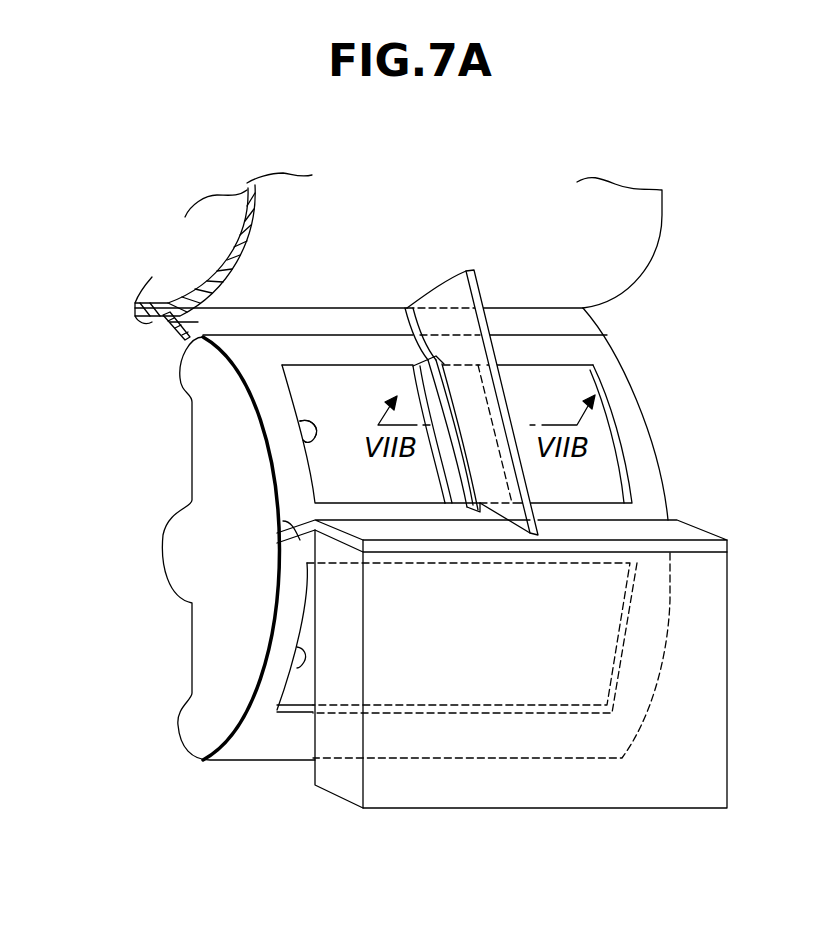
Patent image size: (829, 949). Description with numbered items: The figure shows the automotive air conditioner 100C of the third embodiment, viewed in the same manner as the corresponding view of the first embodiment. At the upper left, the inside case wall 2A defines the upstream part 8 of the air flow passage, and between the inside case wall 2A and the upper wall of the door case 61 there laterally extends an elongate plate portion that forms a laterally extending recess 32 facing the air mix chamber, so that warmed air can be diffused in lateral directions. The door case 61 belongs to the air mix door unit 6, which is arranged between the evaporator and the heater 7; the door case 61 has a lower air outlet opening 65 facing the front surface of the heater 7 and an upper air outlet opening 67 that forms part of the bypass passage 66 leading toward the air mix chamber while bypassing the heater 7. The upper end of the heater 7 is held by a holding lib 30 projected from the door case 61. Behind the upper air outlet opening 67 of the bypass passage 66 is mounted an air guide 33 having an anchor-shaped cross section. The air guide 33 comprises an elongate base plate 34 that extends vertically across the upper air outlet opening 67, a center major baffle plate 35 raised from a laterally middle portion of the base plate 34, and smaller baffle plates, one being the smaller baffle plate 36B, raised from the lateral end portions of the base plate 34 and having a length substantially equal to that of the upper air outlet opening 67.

The automotive air conditioner 100C is at (658, 143).
The inside case wall 2A is at (662, 216).
The air mix door unit 6 is at (298, 334).
The heater 7 is at (330, 780).
The upstream part 8 is at (210, 273).
The holding lib 30 is at (283, 521).
The recess 32 is at (173, 333).
The air guide 33 is at (448, 273).
The base plate 34 is at (455, 487).
The center major baffle plate 35 is at (470, 297).
The smaller baffle plate 36B is at (414, 362).
The door case 61 is at (248, 348).
The lower air outlet opening 65 is at (297, 647).
The bypass passage 66 is at (197, 464).
The upper air outlet opening 67 is at (300, 421).